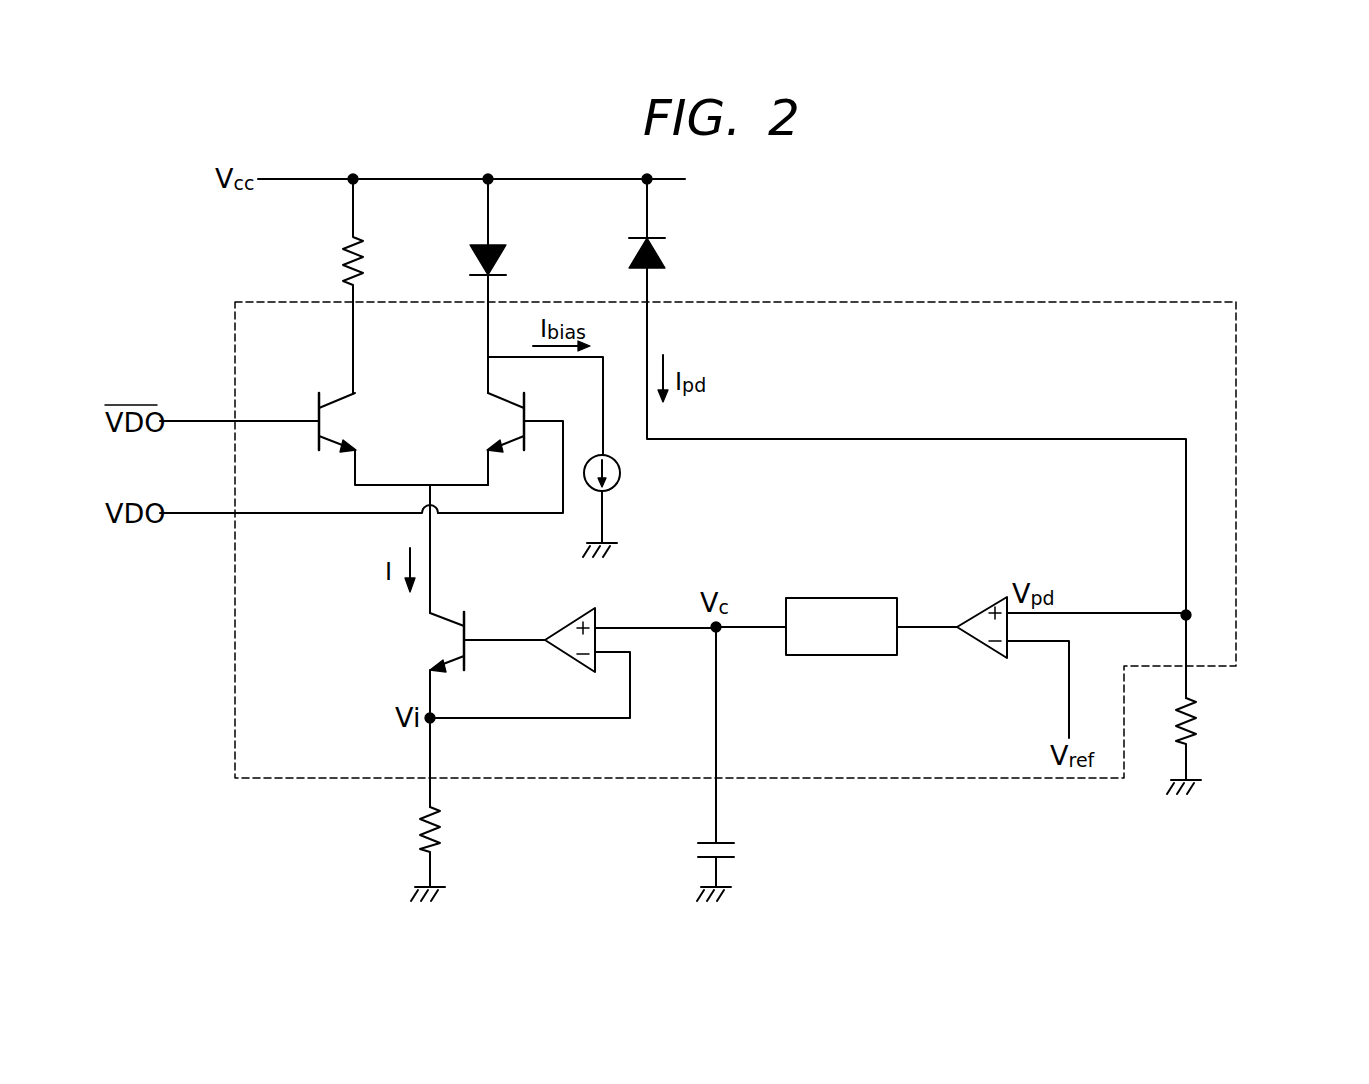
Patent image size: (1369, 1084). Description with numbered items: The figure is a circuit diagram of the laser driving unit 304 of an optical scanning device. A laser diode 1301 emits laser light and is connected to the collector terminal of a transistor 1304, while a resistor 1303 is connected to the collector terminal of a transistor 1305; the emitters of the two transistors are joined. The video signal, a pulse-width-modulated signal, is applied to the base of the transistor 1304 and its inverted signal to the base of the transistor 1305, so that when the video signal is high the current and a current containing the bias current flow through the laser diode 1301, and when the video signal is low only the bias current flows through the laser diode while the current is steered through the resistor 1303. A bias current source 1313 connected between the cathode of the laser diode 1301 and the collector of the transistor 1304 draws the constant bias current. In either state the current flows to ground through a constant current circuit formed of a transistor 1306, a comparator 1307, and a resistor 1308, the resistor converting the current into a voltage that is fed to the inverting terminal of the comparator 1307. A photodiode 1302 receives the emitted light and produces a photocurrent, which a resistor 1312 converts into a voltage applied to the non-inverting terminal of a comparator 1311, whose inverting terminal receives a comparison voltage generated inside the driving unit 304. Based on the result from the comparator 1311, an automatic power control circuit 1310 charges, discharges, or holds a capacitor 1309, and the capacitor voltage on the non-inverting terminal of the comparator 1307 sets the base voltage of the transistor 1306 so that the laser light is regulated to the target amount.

The driving unit 304 is at (1238, 440).
The laser diode 1301 is at (500, 262).
The photodiode 1302 is at (665, 253).
The resistor 1303 is at (345, 243).
The transistor 1304 is at (488, 415).
The transistor 1305 is at (347, 415).
The transistor 1306 is at (428, 638).
The comparator 1307 is at (567, 624).
The resistor 1308 is at (440, 832).
The capacitor 1309 is at (736, 850).
The APC circuit 1310 is at (843, 657).
The comparator 1311 is at (983, 650).
The resistor 1312 is at (1198, 722).
The bias current source 1313 is at (621, 473).